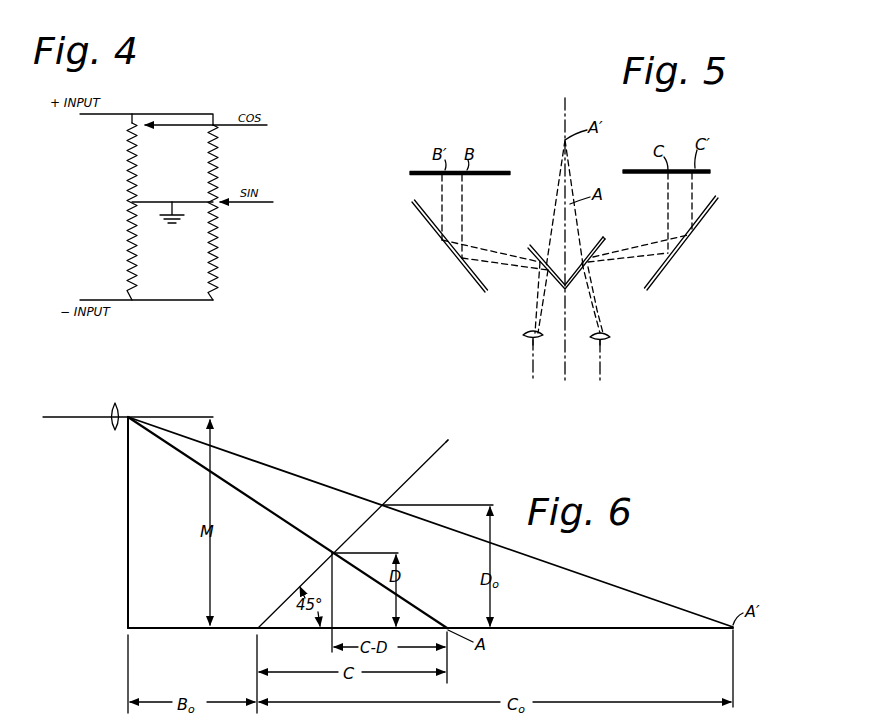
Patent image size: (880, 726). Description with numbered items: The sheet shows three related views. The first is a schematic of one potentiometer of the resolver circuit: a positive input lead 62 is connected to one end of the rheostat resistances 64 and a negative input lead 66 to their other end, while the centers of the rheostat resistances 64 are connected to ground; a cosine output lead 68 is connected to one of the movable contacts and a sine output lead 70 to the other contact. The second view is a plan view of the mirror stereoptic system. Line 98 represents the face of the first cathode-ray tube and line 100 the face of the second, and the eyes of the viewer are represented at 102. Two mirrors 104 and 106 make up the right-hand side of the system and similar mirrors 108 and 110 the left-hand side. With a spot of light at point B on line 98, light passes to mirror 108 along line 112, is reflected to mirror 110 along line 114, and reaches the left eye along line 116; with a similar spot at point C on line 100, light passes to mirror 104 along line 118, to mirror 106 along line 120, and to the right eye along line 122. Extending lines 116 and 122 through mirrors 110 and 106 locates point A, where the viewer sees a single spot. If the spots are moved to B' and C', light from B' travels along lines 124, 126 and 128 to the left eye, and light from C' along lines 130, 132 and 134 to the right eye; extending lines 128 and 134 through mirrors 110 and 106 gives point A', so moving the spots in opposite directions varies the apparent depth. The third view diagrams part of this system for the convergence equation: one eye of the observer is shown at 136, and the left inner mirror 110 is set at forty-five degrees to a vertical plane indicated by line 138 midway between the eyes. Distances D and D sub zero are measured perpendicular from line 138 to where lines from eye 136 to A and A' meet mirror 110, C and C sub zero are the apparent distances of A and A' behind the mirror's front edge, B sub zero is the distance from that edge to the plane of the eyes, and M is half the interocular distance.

In FIG. 4, the positive input lead 62 is at (120, 112).
In FIG. 4, the rheostat resistances 64 is at (142, 153).
In FIG. 4, the negative input lead 66 is at (105, 297).
In FIG. 4, the cosine output lead 68 is at (228, 122).
In FIG. 4, the sine output lead 70 is at (244, 206).
In FIG. 5, the face of cathode-ray tube number one 98 is at (492, 168).
In FIG. 5, the face of cathode-ray tube number two 100 is at (710, 170).
In FIG. 5, the eyes of the viewer 102 is at (594, 341).
In FIG. 5, the mirror 104 is at (683, 248).
In FIG. 5, the mirror 106 is at (603, 237).
In FIG. 5, the mirror 108 is at (447, 245).
In FIG. 5, the mirror 110 is at (542, 242).
In FIG. 6, the mirror 110 is at (410, 477).
In FIG. 5, the line 112 is at (465, 205).
In FIG. 5, the line 114 is at (488, 266).
In FIG. 5, the line 116 is at (527, 322).
In FIG. 5, the line 118 is at (667, 197).
In FIG. 5, the line 120 is at (648, 266).
In FIG. 5, the line 122 is at (610, 329).
In FIG. 5, the line 124 is at (440, 195).
In FIG. 5, the line 126 is at (492, 249).
In FIG. 5, the line 128 is at (537, 293).
In FIG. 5, the line 130 is at (693, 190).
In FIG. 5, the line 132 is at (668, 245).
In FIG. 5, the line 134 is at (594, 293).
In FIG. 6, the eye of the observer 136 is at (122, 408).
In FIG. 6, the line 138 is at (565, 631).